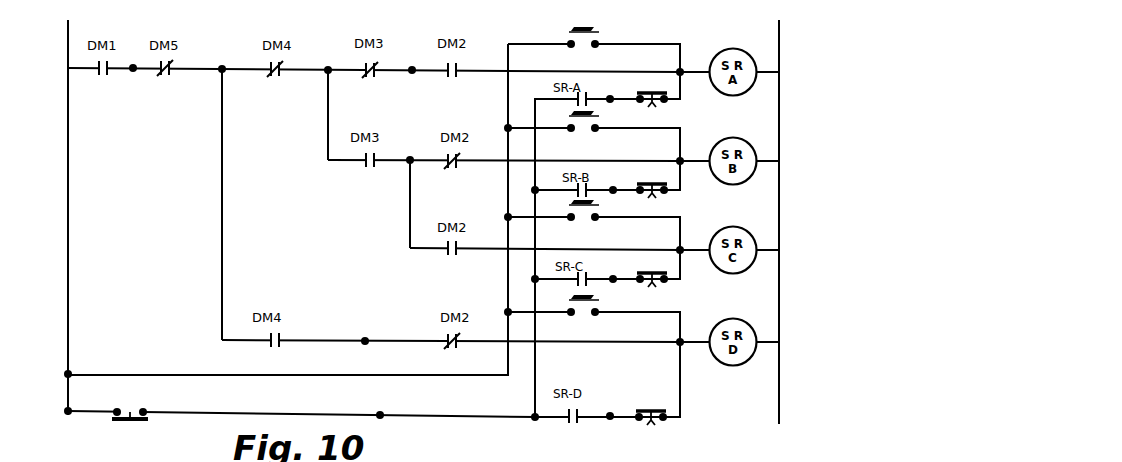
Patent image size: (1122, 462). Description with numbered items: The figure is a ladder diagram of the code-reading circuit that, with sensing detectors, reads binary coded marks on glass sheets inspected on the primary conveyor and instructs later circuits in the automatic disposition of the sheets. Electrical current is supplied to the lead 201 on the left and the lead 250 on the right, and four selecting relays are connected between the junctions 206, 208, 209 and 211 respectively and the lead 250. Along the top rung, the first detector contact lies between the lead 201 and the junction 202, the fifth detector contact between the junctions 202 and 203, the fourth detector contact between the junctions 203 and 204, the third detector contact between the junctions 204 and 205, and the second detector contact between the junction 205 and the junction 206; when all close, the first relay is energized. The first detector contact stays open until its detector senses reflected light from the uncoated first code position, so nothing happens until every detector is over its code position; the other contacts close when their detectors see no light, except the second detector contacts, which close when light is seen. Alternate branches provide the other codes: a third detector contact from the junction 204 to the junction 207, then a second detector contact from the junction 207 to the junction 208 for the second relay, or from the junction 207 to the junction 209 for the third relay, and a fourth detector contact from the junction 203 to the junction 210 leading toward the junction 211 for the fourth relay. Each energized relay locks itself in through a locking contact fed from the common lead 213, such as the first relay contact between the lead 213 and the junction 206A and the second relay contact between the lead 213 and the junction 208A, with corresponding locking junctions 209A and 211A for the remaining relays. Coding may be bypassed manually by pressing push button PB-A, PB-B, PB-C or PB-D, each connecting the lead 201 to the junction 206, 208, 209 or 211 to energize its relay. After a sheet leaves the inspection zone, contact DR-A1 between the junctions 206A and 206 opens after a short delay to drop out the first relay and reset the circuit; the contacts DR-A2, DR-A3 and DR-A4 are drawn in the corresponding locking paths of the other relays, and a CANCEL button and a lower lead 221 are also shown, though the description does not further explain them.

The supply lead 201 is at (68, 41).
The junction between contacts DM1 and DM5 202 is at (133, 72).
The junction after contact DM5 203 is at (233, 54).
The junction after contact DM4 204 is at (337, 55).
The junction after contact DM3 205 is at (425, 55).
The relay SRA terminal junction 206 is at (678, 71).
The locking contact junction for relay SRA 206A is at (615, 93).
The junction after alternate contact DM3 207 is at (428, 145).
The relay SRB terminal junction 208 is at (679, 159).
The locking contact junction for relay SRB 208A is at (617, 184).
The relay SRC terminal junction 209 is at (679, 248).
The locking contact junction for relay SRC 209A is at (617, 273).
The junction after alternate contact DM4 210 is at (373, 325).
The relay SRD terminal junction 211 is at (678, 340).
The locking contact junction for relay SRD 211A is at (610, 412).
The locking circuit lead 213 is at (389, 403).
The return conductor 221 is at (51, 446).
The return lead 250 is at (779, 30).
The push button PB-A is at (600, 31).
The push button PB-B is at (600, 121).
The push button PB-C is at (599, 210).
The push button PB-D is at (599, 304).
The contact DR-A1 is at (659, 102).
The relay contact DR-A2 is at (659, 193).
The relay contact DR-A3 is at (659, 282).
The relay contact DR-A4 is at (655, 425).
The cancel push button CANCEL is at (130, 408).